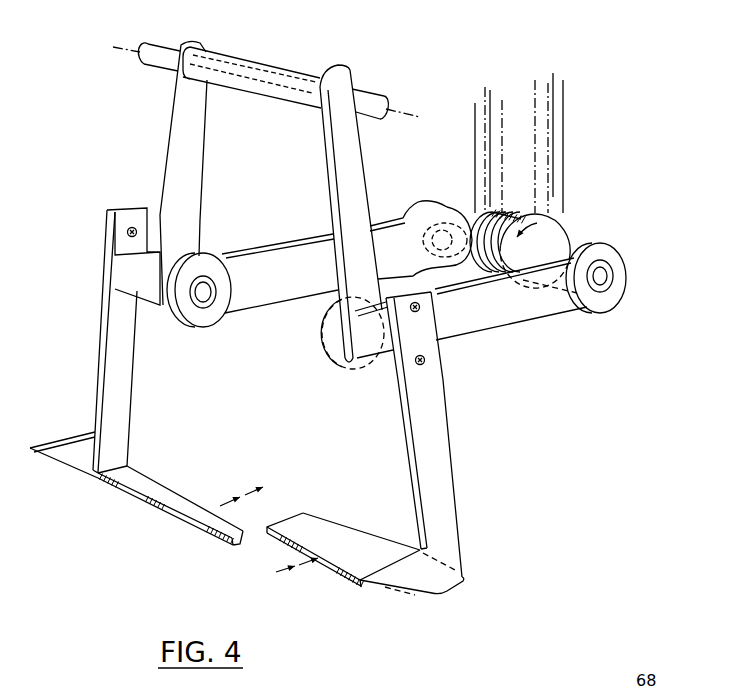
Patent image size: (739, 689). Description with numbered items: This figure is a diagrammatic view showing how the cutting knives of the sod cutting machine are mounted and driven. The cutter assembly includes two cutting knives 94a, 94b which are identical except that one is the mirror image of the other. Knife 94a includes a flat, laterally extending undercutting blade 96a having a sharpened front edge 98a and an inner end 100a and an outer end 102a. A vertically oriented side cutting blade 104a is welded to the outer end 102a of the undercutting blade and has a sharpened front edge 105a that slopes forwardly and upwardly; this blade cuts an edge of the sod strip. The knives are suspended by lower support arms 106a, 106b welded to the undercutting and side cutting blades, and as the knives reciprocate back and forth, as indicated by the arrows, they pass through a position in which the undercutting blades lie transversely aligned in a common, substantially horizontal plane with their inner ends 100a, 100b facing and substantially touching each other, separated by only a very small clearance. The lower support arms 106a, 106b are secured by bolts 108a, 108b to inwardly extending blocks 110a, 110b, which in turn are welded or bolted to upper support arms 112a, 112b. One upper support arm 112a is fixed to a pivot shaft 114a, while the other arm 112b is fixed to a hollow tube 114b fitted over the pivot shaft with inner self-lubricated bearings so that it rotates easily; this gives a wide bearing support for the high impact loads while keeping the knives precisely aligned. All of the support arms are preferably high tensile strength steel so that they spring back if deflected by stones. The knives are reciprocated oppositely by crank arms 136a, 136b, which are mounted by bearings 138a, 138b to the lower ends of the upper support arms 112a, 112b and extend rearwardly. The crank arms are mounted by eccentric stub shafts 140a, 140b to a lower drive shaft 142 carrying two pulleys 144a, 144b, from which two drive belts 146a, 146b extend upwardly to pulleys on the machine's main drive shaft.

The cutting knife 94a is at (197, 503).
The cutting knife 94b is at (365, 547).
The undercutting blade 96a is at (183, 497).
The sharpened front edge 98a is at (183, 522).
The inner end 100a is at (245, 544).
The inner end 100b is at (287, 518).
The outer end 102a is at (115, 463).
The side cutting blade 104a is at (73, 452).
The sharpened front edge 105a is at (56, 463).
The lower support arm 106a is at (115, 363).
The lower support arm 106b is at (421, 423).
The bolt 108a is at (133, 226).
The bolt 108b is at (427, 361).
The inwardly extending block 110a is at (130, 276).
The inwardly extending block 110b is at (382, 352).
The upper support arm 112a is at (188, 173).
The upper support arm 112b is at (340, 166).
The pivot shaft 114a is at (366, 97).
The hollow tube 114b is at (279, 66).
The crank arm 136a is at (271, 289).
The crank arm 136b is at (515, 306).
The bearing 138a is at (173, 316).
The bearing 138b is at (333, 350).
The eccentric stub shaft 140a is at (444, 205).
The eccentric stub shaft 140b is at (613, 260).
The lower drive shaft 142 is at (560, 248).
The pulley 144a is at (510, 208).
The pulley 144b is at (557, 233).
The drive belt 146a is at (478, 103).
The drive belt 146b is at (558, 107).